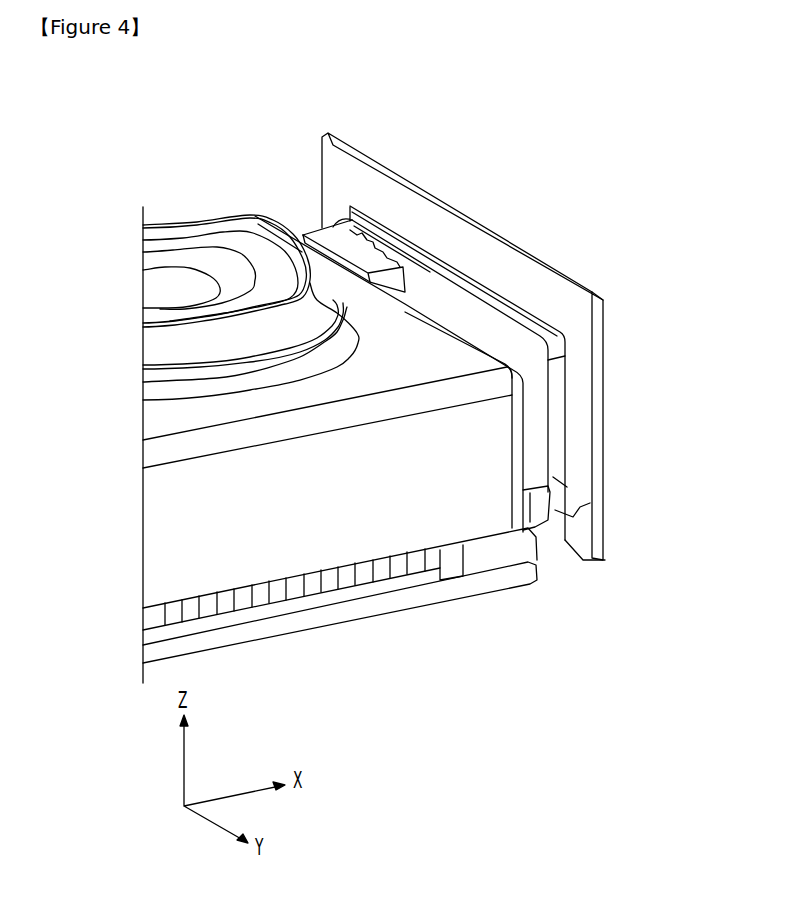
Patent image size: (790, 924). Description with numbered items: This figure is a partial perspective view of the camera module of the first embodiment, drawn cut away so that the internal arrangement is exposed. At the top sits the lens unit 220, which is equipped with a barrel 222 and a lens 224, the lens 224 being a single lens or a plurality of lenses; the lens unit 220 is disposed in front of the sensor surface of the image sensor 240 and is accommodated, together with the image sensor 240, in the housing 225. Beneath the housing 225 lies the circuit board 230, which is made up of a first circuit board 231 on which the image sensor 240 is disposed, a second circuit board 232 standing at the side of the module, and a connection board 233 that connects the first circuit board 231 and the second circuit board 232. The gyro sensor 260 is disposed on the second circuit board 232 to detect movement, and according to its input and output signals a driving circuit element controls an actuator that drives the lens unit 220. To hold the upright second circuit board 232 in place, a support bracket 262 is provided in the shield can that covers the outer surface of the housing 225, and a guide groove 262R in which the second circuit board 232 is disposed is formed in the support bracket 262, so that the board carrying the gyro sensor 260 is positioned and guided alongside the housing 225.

The lens unit 220 is at (251, 242).
The barrel 222 is at (179, 282).
The lens 224 is at (255, 262).
The housing 225 is at (160, 500).
The circuit board 230 is at (402, 469).
The first circuit board 231 is at (467, 587).
The second circuit board 232 is at (558, 462).
The connection board 233 is at (540, 495).
The image sensor 240 is at (314, 590).
The gyro sensor 260 is at (352, 218).
The support bracket 262 is at (515, 382).
The guide groove 262R is at (556, 513).